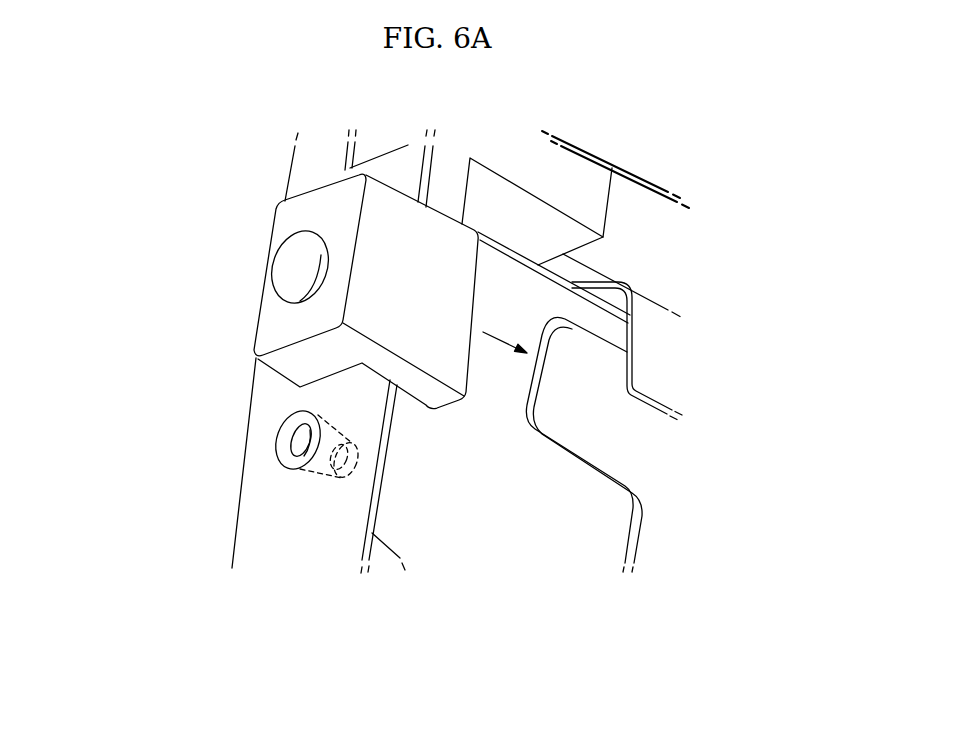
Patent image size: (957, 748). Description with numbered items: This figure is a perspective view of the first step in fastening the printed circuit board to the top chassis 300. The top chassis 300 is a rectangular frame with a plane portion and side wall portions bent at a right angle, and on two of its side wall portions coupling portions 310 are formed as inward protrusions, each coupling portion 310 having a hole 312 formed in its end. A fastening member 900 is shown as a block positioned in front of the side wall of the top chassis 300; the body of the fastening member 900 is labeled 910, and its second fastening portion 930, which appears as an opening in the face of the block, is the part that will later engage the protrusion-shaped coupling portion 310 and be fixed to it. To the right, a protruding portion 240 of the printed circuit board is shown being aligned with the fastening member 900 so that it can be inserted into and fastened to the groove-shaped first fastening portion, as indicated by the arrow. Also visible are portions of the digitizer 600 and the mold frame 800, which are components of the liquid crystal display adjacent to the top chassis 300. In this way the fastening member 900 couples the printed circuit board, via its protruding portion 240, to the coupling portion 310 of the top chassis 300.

The protruding portion 240 is at (612, 417).
The top chassis 300 is at (260, 513).
The coupling portion 310 is at (288, 443).
The hole 312 is at (303, 433).
The digitizer 600 is at (423, 530).
The mold frame 800 is at (591, 172).
The fastening member 900 is at (299, 291).
The block body 910 is at (292, 331).
The second fastening portion 930 is at (292, 272).